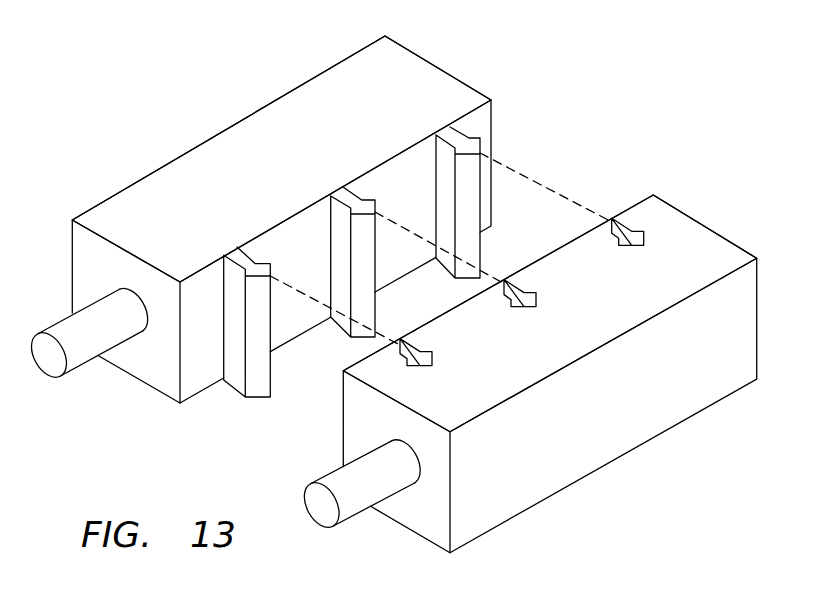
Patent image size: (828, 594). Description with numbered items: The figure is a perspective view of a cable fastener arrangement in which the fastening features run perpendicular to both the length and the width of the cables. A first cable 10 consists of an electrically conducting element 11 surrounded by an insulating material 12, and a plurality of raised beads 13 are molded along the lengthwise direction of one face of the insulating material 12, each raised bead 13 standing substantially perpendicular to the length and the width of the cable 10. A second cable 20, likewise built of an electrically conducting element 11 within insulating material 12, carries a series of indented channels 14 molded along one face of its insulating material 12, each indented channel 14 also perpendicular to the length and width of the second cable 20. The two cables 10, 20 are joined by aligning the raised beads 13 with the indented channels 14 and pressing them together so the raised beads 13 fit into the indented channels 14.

The cable 10 is at (222, 131).
The electrically conducting element 11 is at (45, 348).
The insulating material 12 is at (430, 86).
The raised bead 13 is at (447, 129).
The indented channel 14 is at (432, 357).
The second cable 20 is at (673, 204).